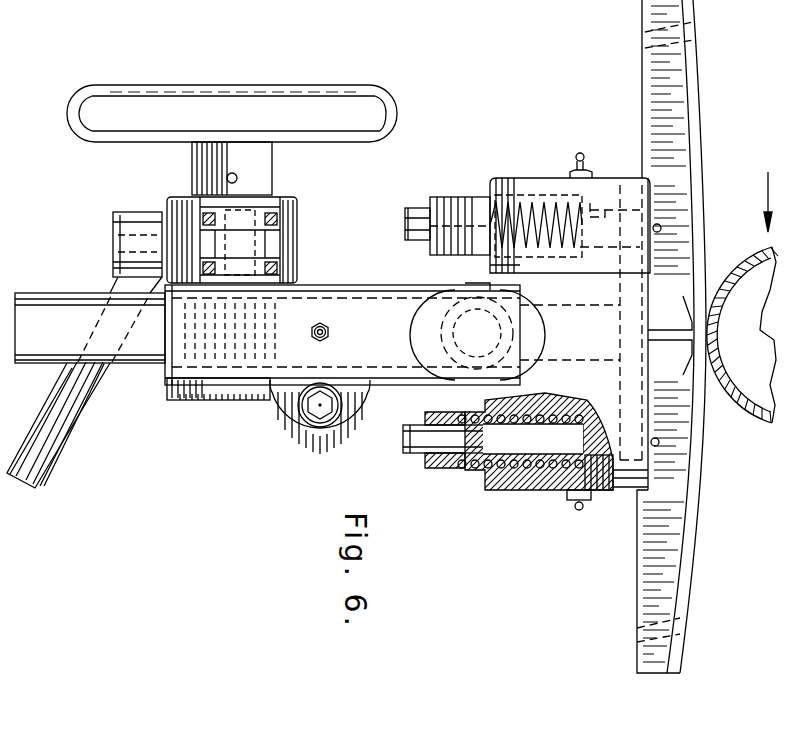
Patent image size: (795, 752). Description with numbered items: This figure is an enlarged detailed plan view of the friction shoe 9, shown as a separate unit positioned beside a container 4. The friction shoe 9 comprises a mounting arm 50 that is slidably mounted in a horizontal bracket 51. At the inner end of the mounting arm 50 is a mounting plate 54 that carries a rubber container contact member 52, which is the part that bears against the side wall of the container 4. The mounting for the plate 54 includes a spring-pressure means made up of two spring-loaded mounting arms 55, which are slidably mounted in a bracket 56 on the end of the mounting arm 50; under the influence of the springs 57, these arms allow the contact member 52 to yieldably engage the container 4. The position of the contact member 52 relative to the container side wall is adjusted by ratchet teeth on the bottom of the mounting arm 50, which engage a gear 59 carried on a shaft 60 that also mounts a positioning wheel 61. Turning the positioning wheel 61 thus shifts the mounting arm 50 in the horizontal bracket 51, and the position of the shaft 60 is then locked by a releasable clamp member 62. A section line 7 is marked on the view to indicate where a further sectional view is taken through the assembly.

The container 4 is at (757, 412).
The section line FIG. 7 is at (195, 60).
The friction shoe 9 is at (707, 488).
The mounting arm 50 is at (130, 358).
The horizontal bracket 51 is at (388, 360).
The rubber container contact member 52 is at (697, 548).
The mounting plate 54 is at (637, 535).
The spring-loaded mounting arms 55 is at (420, 206).
The bracket 56 is at (540, 475).
The springs 57 is at (497, 470).
The gear 59 is at (293, 326).
The shaft 60 is at (297, 205).
The positioning wheel 61 is at (352, 140).
The releasable clamp member 62 is at (110, 276).